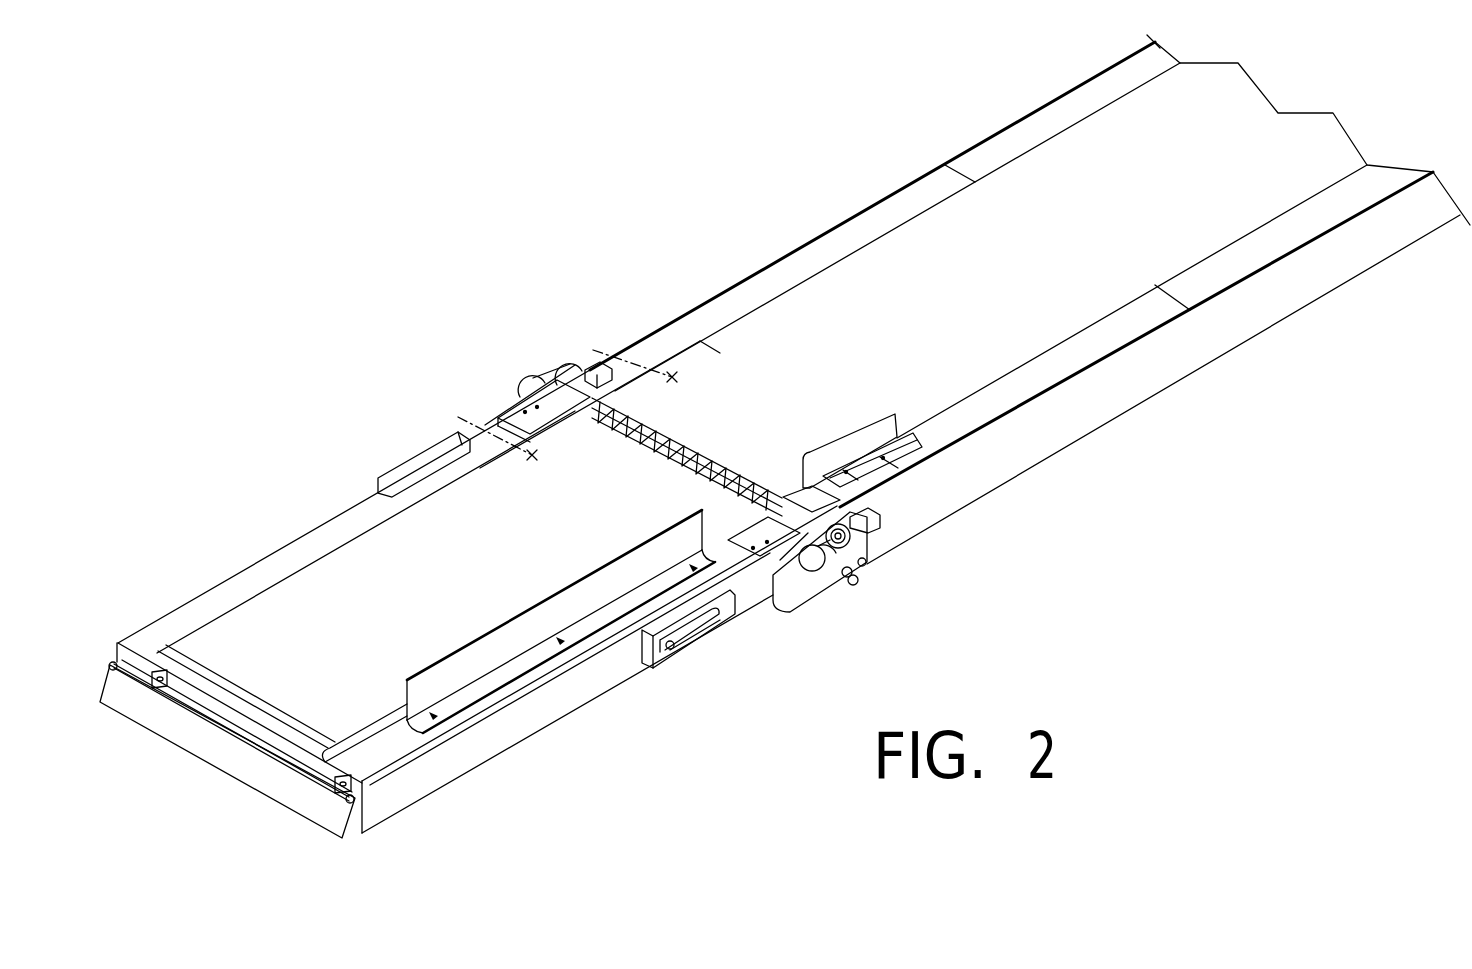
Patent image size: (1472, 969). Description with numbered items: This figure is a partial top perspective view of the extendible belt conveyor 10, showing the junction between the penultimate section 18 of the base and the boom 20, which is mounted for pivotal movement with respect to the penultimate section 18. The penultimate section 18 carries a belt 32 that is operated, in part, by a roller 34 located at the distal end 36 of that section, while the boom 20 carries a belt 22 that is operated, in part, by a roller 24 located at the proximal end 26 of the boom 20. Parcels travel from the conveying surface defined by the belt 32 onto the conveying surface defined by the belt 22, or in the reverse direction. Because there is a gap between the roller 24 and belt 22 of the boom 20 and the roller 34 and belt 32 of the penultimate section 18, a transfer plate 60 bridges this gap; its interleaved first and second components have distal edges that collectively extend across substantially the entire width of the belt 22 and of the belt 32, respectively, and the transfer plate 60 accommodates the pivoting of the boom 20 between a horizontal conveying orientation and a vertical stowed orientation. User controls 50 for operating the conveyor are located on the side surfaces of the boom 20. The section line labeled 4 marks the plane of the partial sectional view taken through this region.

The extendible belt conveyor 10 is at (311, 246).
The penultimate section 18 is at (787, 256).
The boom 20 is at (228, 577).
The belt 22 is at (575, 535).
The roller 24 is at (537, 377).
The proximal end 26 is at (638, 447).
The belt 32 is at (883, 361).
The roller 34 is at (583, 366).
The distal end 36 is at (733, 425).
The user controls 50 is at (392, 470).
The transfer plate 60 is at (702, 408).
The section line 4- 4 is at (553, 386).